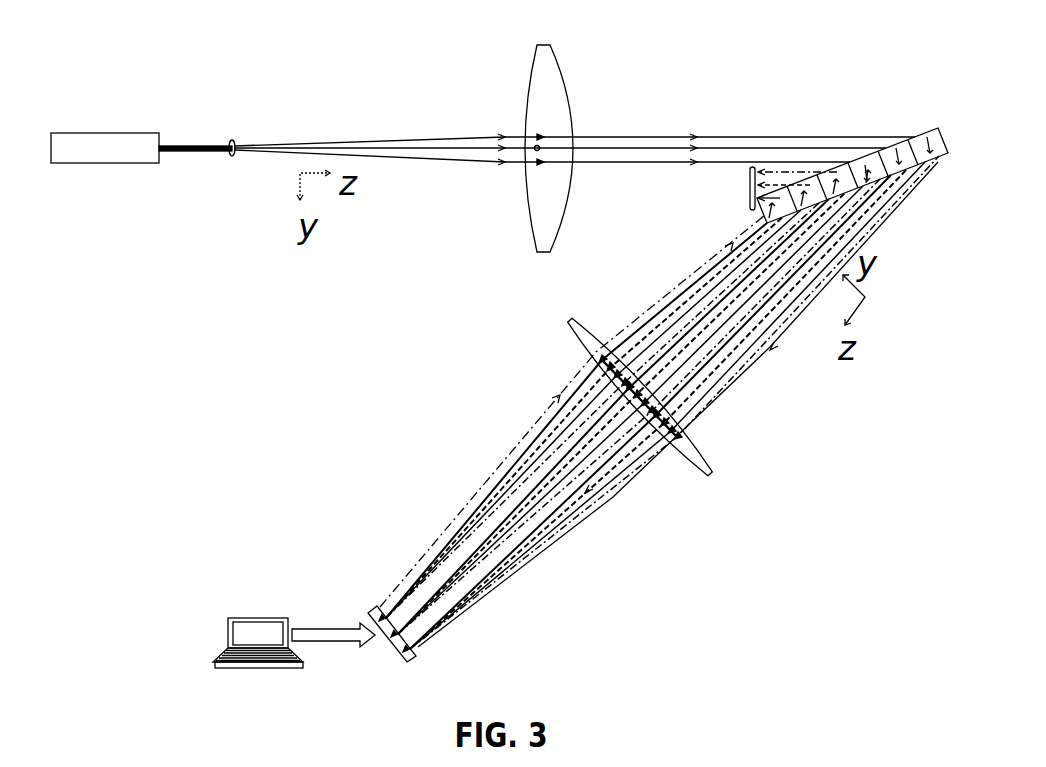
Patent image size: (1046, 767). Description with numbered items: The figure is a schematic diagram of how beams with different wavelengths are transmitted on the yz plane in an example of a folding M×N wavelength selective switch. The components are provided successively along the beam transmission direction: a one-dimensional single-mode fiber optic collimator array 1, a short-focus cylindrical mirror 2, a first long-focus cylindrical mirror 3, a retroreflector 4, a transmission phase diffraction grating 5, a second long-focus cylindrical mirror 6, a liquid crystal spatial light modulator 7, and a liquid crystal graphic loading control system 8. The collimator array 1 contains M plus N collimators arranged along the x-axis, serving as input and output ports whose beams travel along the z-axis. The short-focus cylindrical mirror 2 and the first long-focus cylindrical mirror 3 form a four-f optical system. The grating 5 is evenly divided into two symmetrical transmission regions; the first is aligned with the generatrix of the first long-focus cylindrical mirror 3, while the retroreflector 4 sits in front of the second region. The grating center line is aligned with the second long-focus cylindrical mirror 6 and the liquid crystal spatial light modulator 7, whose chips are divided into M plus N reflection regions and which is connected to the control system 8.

The one-dimensional single-mode fiber optic collimator array 1 is at (110, 162).
The short-focus cylindrical mirror 2 is at (230, 160).
The first long-focus cylindrical mirror 3 is at (533, 193).
The retroreflector 4 is at (748, 183).
The transmission phase diffraction grating 5 is at (917, 153).
The second long-focus cylindrical mirror 6 is at (697, 455).
The liquid crystal spatial light modulator 7 is at (410, 658).
The liquid crystal graphic loading control system 8 is at (258, 627).